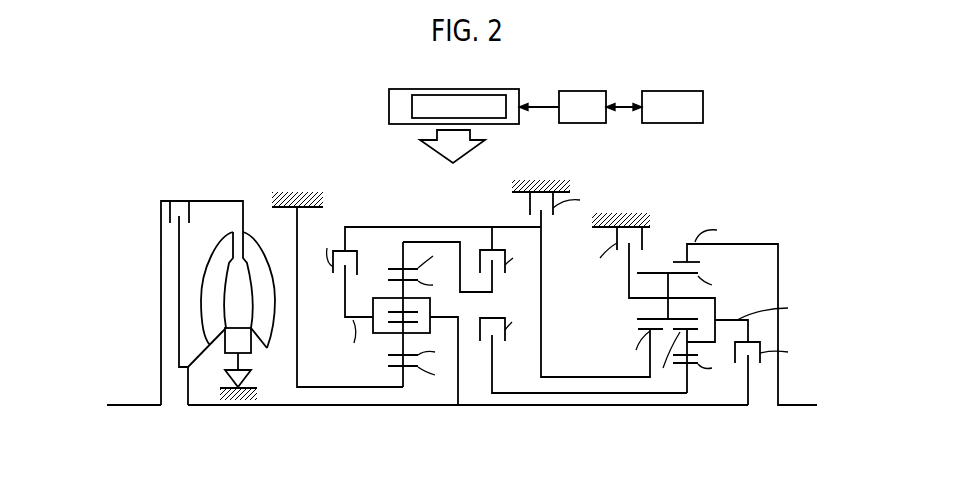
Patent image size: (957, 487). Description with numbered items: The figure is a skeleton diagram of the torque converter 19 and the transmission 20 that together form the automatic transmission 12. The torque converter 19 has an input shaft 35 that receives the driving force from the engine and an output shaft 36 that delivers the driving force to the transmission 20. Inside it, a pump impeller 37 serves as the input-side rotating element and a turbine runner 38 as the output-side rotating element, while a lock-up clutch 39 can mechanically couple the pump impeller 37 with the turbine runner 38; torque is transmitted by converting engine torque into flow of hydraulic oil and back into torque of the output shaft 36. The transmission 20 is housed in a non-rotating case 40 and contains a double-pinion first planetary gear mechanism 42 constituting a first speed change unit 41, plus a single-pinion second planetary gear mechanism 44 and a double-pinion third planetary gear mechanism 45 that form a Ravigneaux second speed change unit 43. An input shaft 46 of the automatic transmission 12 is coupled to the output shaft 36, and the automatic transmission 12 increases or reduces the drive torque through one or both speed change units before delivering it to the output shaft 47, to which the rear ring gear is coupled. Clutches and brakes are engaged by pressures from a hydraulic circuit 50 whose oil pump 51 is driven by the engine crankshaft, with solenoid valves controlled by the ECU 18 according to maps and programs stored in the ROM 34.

The automatic transmission 12 is at (212, 113).
The ECU 18 is at (593, 91).
The torque converter 19 is at (152, 165).
The transmission 20 is at (320, 130).
The ROM 34 is at (695, 91).
The input shaft 35 is at (135, 407).
The output shaft 36 is at (193, 407).
The pump impeller 37 is at (252, 235).
The turbine runner 38 is at (222, 236).
The lock-up clutch 39 is at (190, 213).
The transmission case 40 is at (233, 398).
The first speed change unit 41 is at (383, 215).
The first planetary gear mechanism 42 is at (410, 387).
The second speed change unit 43 is at (728, 198).
The second planetary gear mechanism 44 is at (665, 257).
The third planetary gear mechanism 45 is at (738, 267).
The input shaft 46 is at (297, 407).
The output shaft 47 is at (800, 407).
The hydraulic circuit 50 is at (430, 95).
The oil pump 51 is at (513, 93).